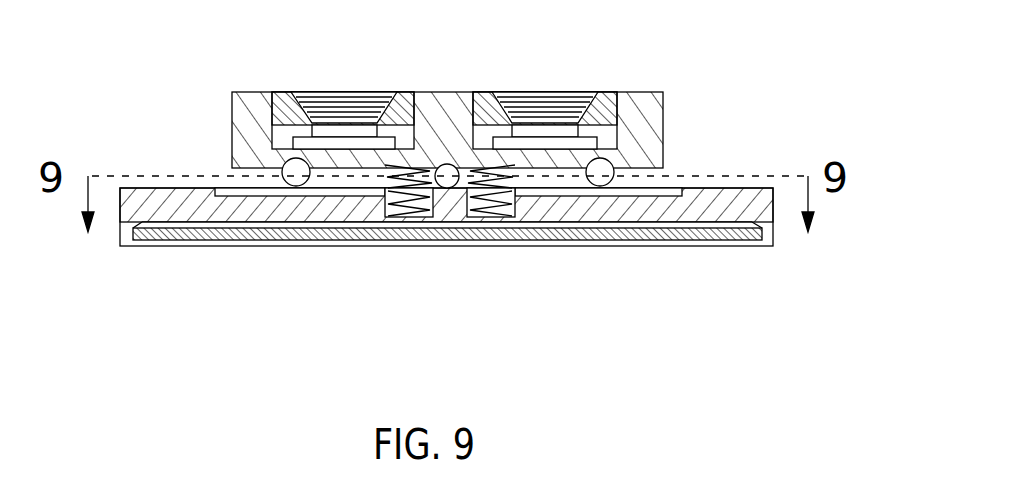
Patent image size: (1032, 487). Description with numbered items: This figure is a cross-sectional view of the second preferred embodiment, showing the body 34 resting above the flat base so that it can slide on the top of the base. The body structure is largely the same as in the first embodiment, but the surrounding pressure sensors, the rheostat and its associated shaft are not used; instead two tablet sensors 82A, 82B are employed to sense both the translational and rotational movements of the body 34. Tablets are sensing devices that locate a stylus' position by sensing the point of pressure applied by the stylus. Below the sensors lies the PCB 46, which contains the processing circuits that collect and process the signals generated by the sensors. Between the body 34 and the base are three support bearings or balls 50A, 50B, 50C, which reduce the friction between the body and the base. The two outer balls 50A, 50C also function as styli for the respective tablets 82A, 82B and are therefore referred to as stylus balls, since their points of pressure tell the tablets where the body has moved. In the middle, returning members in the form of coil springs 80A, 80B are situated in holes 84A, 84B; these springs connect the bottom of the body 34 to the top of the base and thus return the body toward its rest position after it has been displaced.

The body 34 is at (243, 130).
The PCB 46 is at (142, 242).
The stylus ball 50A is at (295, 186).
The ball 50B is at (447, 188).
The stylus ball 50C is at (602, 186).
The coil spring 80A is at (405, 172).
The coil spring 80B is at (493, 172).
The tablet sensor 82A is at (230, 193).
The tablet sensor 82B is at (653, 193).
The hole 84A is at (390, 200).
The hole 84B is at (507, 200).